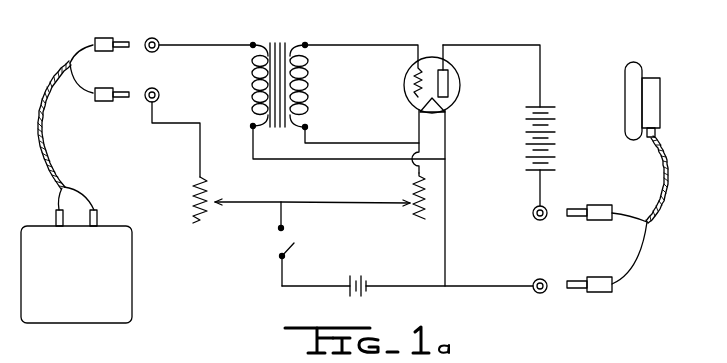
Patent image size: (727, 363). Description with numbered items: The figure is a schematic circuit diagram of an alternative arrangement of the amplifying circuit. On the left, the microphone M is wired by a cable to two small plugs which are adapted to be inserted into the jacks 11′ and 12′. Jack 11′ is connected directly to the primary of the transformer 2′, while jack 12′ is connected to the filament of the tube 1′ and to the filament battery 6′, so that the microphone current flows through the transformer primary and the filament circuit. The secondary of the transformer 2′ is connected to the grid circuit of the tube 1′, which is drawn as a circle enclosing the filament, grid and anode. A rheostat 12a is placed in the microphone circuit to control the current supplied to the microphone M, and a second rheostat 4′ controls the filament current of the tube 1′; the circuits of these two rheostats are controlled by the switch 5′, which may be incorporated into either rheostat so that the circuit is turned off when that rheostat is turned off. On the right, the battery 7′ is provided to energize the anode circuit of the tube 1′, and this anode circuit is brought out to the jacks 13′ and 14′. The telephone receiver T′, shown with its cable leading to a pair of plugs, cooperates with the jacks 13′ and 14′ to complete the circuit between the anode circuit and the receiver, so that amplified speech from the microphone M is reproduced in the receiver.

The tube 1′ is at (461, 89).
The transformer 2′ is at (290, 41).
The rheostat 4′ is at (408, 213).
The switch 5′ is at (292, 256).
The filament battery 6′ is at (365, 272).
The battery 7′ is at (532, 154).
The jack 11′ is at (157, 50).
The jack 12′ is at (172, 131).
The rheostat 12a is at (214, 192).
The jack 13′ is at (534, 219).
The jack 14′ is at (533, 276).
The telephone receiver T′ is at (626, 118).
The microphone M is at (76, 192).